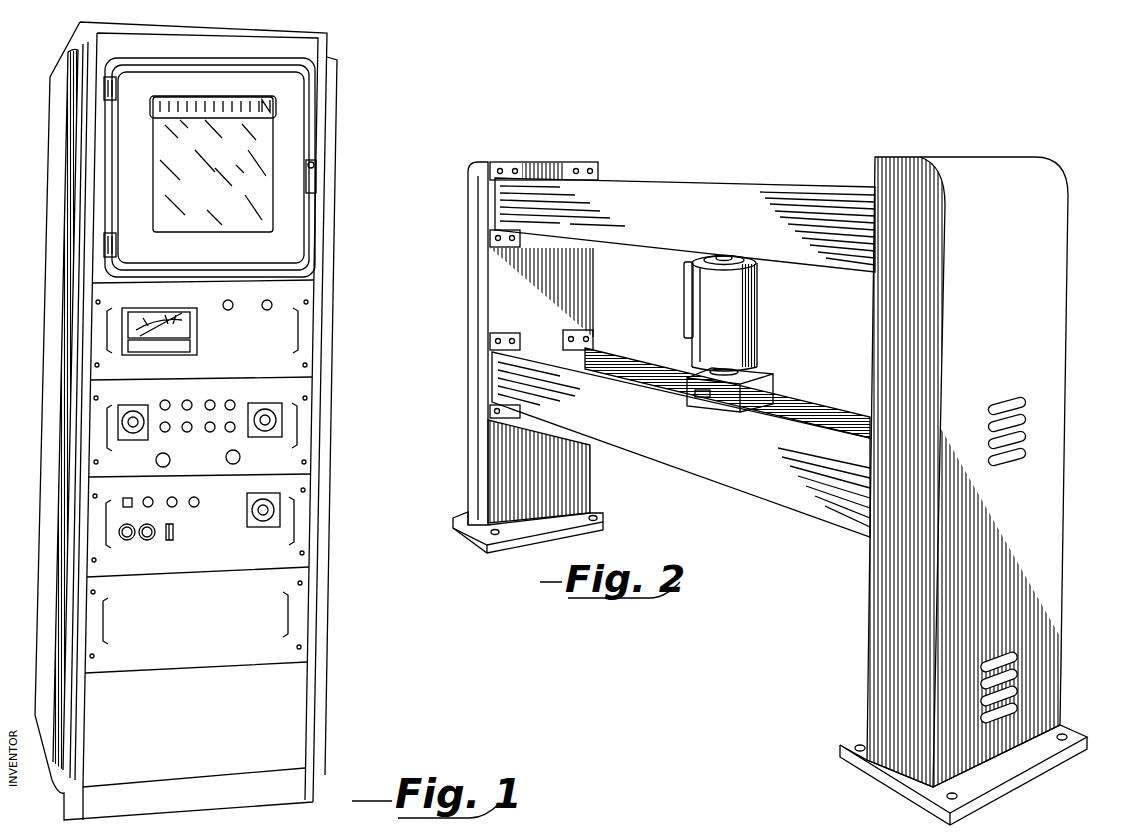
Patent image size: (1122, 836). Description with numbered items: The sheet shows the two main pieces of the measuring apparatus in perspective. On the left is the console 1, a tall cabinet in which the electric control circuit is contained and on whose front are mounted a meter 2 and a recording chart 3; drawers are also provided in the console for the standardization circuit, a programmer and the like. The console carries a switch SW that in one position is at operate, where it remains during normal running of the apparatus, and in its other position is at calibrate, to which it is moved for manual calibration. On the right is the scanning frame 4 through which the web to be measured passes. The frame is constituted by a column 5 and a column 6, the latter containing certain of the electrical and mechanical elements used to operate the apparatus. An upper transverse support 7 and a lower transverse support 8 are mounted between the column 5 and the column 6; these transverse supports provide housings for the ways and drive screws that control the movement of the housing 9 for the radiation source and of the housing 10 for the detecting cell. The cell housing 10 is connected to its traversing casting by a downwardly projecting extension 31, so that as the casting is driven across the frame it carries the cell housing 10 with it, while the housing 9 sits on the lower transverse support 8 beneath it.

In FIG. 1, the console 1 is at (211, 421).
In FIG. 1, the meter 2 is at (155, 334).
In FIG. 1, the recording chart 3 is at (240, 212).
In FIG. 2, the scanning frame 4 is at (801, 132).
In FIG. 2, the column 5 is at (497, 301).
In FIG. 2, the column 6 is at (1050, 315).
In FIG. 2, the upper transverse support 7 is at (698, 192).
In FIG. 2, the lower transverse support 8 is at (710, 468).
In FIG. 2, the housing for a radiation source 9 is at (770, 386).
In FIG. 2, the housing for the detecting cell 10 is at (757, 317).
In FIG. 2, the downwardly projecting extension 31 is at (688, 292).
In FIG. 1, the switch SW is at (176, 529).